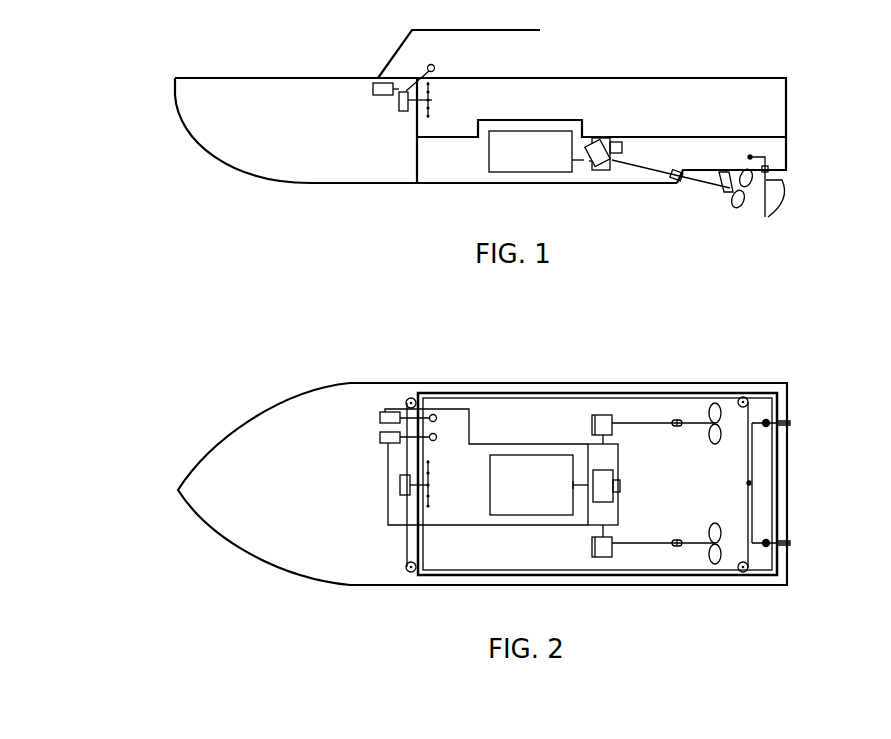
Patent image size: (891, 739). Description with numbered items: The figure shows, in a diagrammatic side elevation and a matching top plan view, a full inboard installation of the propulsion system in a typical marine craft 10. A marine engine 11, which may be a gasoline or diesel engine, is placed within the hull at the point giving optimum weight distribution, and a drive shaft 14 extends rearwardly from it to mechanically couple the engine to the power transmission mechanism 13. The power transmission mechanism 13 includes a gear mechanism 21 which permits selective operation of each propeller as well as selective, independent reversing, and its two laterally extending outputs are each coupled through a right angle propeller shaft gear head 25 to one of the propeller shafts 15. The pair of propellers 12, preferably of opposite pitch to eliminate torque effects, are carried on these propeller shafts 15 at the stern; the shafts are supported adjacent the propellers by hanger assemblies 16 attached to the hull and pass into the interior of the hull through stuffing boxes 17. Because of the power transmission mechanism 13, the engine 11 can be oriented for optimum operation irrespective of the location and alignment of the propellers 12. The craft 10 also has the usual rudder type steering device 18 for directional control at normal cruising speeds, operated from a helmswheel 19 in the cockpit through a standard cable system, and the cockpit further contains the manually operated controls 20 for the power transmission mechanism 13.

In FIG. 1, the marine craft 10 is at (300, 78).
In FIG. 2, the marine craft 10 is at (330, 386).
In FIG. 1, the marine engine 11 is at (489, 157).
In FIG. 2, the marine engine 11 is at (528, 515).
In FIG. 1, the propellers 12 is at (737, 207).
In FIG. 2, the propellers 12 is at (715, 444).
In FIG. 1, the power transmission mechanism 13 is at (596, 131).
In FIG. 2, the power transmission mechanism 13 is at (580, 441).
In FIG. 1, the drive shaft 14 is at (582, 166).
In FIG. 2, the drive shaft 14 is at (584, 489).
In FIG. 1, the propeller shafts 15 is at (680, 183).
In FIG. 2, the propeller shafts 15 is at (694, 427).
In FIG. 1, the hanger assemblies 16 is at (723, 183).
In FIG. 1, the stuffing boxes 17 is at (680, 168).
In FIG. 1, the rudder type steering device 18 is at (786, 195).
In FIG. 2, the rudder type steering device 18 is at (788, 423).
In FIG. 1, the helmswheel 19 is at (432, 100).
In FIG. 2, the helmswheel 19 is at (433, 478).
In FIG. 1, the manually operated controls 20 is at (436, 64).
In FIG. 2, the manually operated controls 20 is at (376, 430).
In FIG. 1, the gear mechanism 21 is at (611, 142).
In FIG. 2, the gear mechanism 21 is at (606, 492).
In FIG. 1, the right angle propeller shaft gear head 25 is at (589, 168).
In FIG. 2, the right angle propeller shaft gear head 25 is at (612, 418).